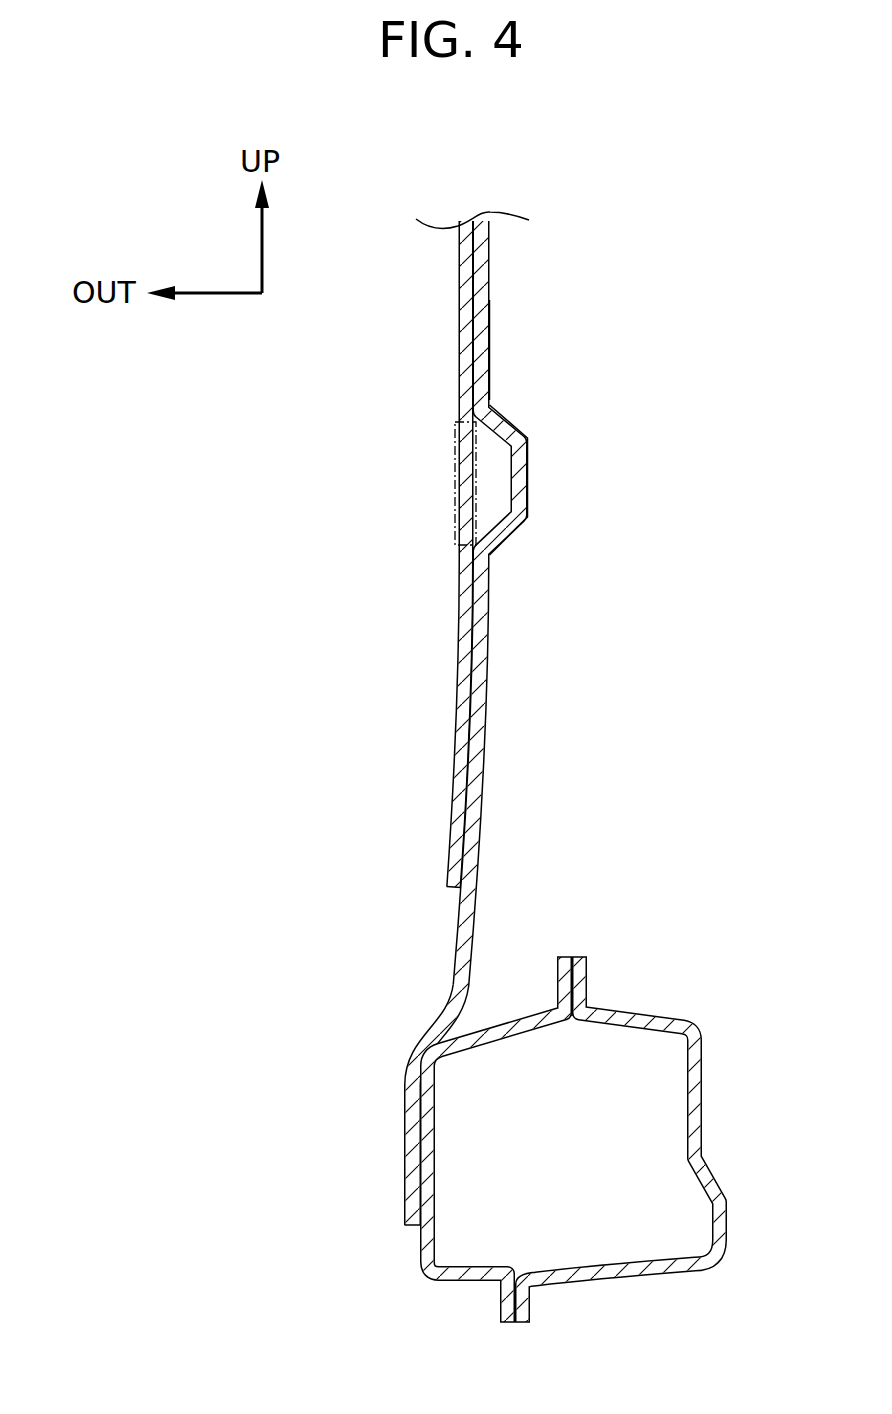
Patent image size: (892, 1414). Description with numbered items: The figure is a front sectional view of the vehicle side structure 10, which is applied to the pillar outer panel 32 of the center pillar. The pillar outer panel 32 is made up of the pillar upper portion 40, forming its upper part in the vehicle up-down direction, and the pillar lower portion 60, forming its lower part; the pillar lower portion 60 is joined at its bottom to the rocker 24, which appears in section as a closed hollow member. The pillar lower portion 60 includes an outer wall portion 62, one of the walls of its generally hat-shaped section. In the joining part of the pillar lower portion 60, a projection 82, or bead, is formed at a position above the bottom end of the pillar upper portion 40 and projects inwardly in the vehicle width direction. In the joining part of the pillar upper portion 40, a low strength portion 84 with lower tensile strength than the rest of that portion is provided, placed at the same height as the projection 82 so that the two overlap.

The vehicle side structure 10 is at (574, 733).
The rocker 24 is at (703, 1128).
The pillar outer panel 32 is at (531, 723).
The pillar upper portion 40 is at (479, 265).
The pillar lower portion 60 is at (489, 314).
The outer wall portion 62 is at (490, 364).
The projection 82 is at (521, 487).
The low strength portion 84 is at (455, 482).